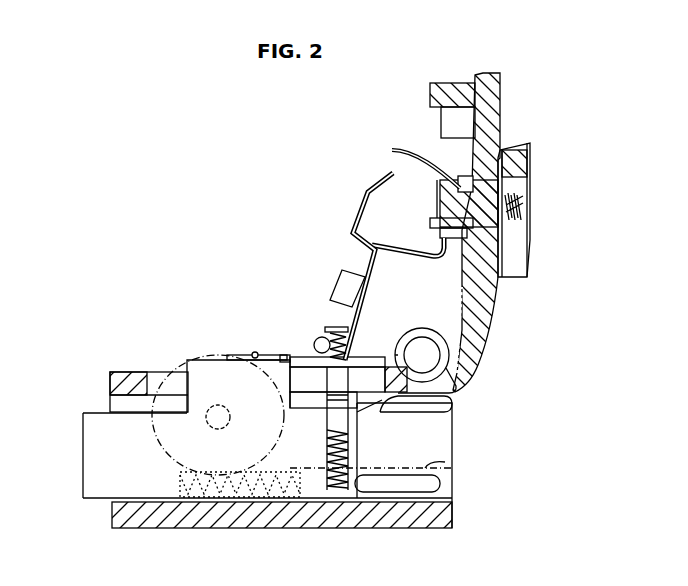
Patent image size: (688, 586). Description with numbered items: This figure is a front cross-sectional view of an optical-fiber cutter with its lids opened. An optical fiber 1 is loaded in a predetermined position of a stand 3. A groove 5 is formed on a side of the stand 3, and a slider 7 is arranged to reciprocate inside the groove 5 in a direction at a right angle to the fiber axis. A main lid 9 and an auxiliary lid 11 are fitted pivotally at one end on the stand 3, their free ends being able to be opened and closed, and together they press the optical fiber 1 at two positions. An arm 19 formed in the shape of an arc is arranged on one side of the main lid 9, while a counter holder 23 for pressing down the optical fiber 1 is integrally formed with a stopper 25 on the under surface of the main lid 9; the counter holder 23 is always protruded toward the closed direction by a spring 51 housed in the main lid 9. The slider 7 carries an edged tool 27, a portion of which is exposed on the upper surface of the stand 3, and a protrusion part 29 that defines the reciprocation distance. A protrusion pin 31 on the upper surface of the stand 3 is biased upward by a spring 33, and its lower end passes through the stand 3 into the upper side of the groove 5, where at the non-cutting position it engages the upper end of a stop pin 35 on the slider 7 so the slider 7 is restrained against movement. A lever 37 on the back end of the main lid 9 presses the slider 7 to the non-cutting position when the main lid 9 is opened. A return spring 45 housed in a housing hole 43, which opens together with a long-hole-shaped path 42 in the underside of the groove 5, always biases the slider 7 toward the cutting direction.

The optical fiber 1 is at (257, 352).
The stand 3 is at (113, 370).
The groove 5 is at (457, 432).
The slider 7 is at (93, 467).
The main lid 9 is at (485, 293).
The auxiliary lid 11 is at (375, 182).
The arm 19 is at (413, 255).
The counter holder 23 is at (468, 185).
The stopper 25 is at (433, 221).
The edged tool 27 is at (170, 373).
The protrusion part 29 is at (205, 372).
The protrusion pin 31 is at (335, 323).
The spring 33 is at (440, 356).
The stop pin 35 is at (311, 480).
The lever 37 is at (452, 411).
The path 42 is at (398, 483).
The housing hole 43 is at (440, 462).
The return spring 45 is at (254, 497).
The spring 51 is at (530, 170).